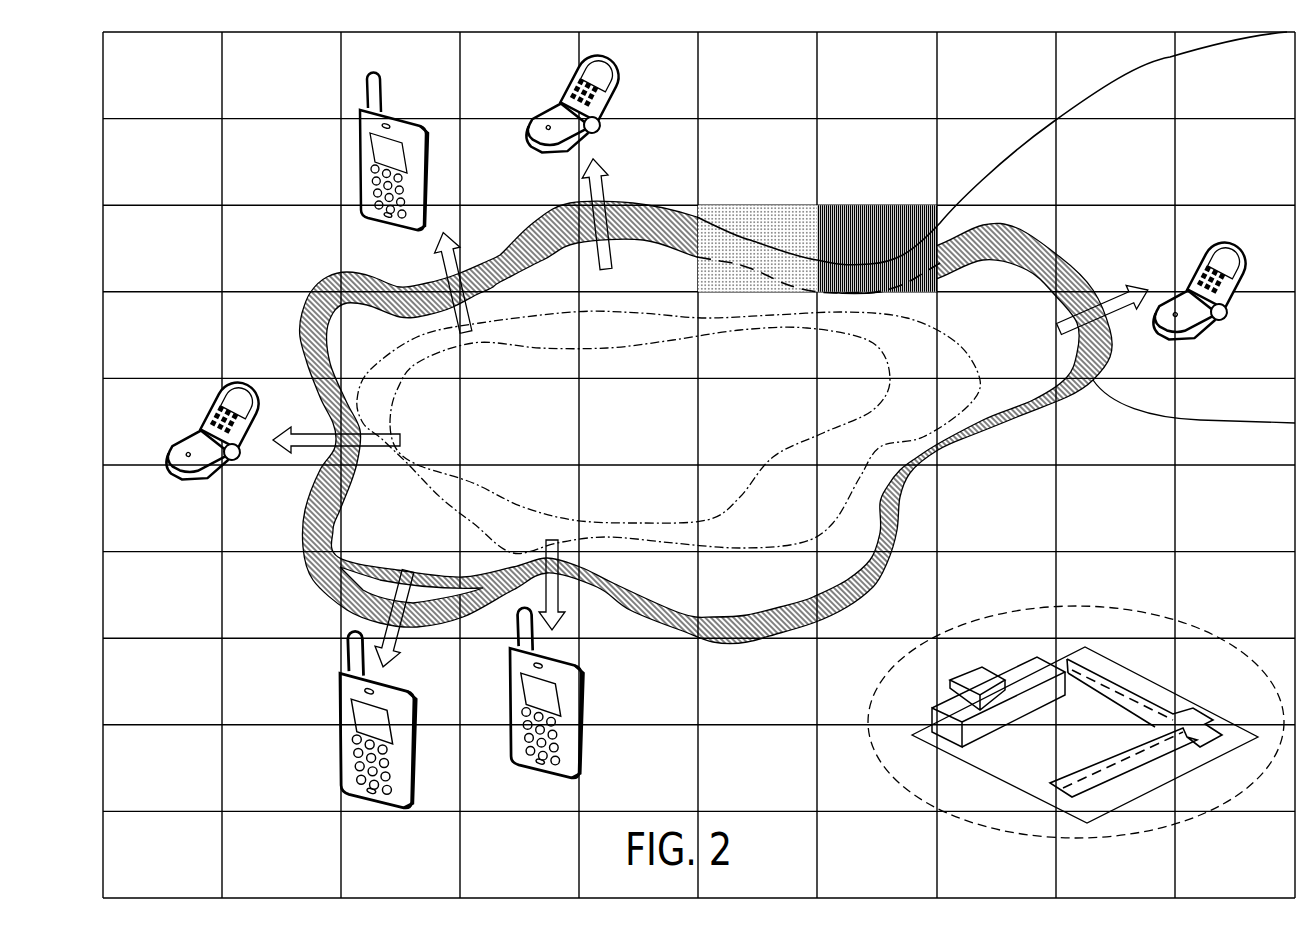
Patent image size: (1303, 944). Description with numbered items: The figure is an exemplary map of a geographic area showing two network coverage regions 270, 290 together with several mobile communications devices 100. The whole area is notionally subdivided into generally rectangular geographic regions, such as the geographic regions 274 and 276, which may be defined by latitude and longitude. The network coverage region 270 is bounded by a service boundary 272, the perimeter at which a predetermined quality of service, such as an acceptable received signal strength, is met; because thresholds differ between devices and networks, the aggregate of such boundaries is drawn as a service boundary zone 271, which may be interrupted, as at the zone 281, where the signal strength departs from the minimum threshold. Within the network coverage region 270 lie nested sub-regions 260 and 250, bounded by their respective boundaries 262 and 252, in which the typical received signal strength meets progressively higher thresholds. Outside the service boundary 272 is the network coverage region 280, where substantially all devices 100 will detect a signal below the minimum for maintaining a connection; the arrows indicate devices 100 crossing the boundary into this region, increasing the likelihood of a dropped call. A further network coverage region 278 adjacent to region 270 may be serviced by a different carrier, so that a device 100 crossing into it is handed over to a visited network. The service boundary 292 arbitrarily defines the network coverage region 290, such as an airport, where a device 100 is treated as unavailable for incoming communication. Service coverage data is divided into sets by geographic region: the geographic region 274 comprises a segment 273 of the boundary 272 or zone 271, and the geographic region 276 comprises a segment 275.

The mobile communications device 100 is at (398, 104).
The network coverage sub-region 250 is at (635, 406).
The sub-region boundary 252 is at (727, 337).
The network coverage sub-region 260 is at (932, 356).
The sub-region boundary 262 is at (815, 528).
The network coverage region 270 is at (773, 595).
The service boundary zone 271 is at (302, 542).
The service boundary 272 is at (770, 640).
The segment of service boundary 273 is at (738, 225).
The geographic region 274 is at (763, 222).
The segment of service boundary 275 is at (857, 243).
The geographic region 276 is at (875, 227).
The further network coverage region 278 is at (1102, 225).
The network coverage region outside the service boundary 280 is at (302, 255).
The interruption zone 281 is at (373, 583).
The network coverage region 290 is at (1105, 734).
The service boundary 292 is at (1128, 607).